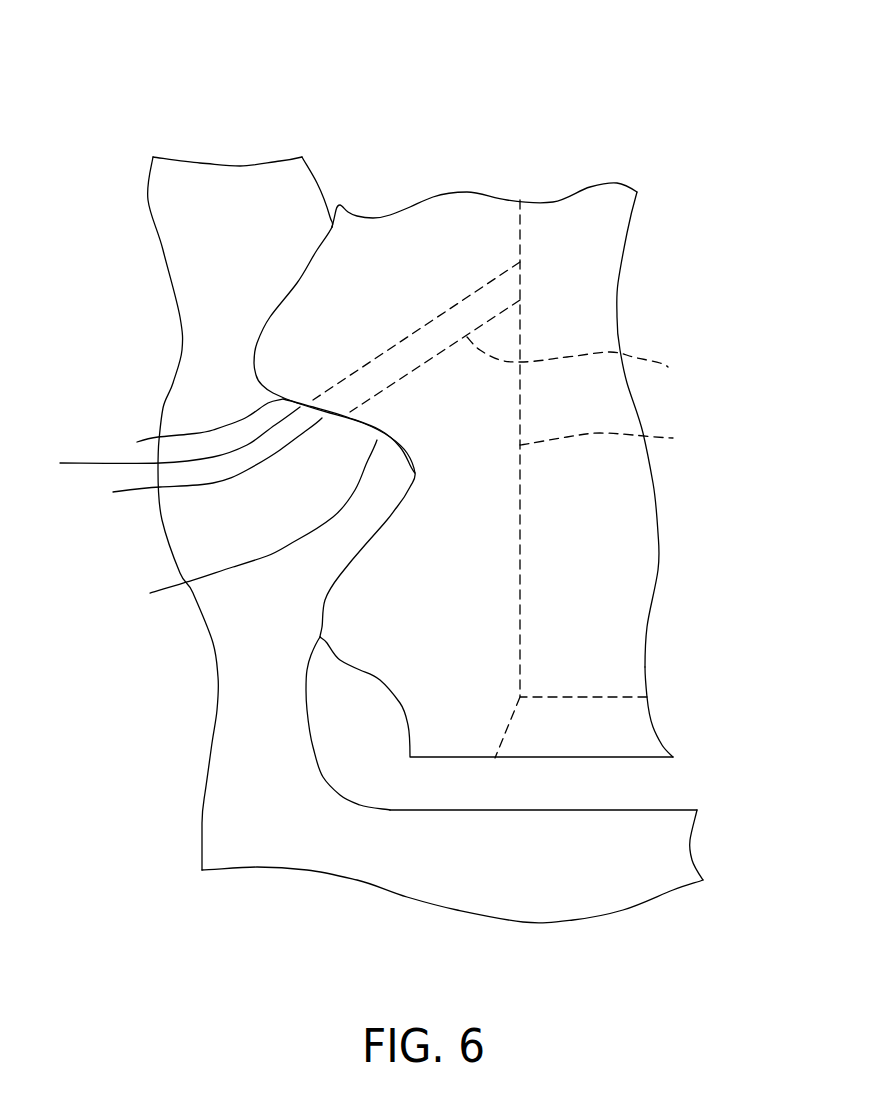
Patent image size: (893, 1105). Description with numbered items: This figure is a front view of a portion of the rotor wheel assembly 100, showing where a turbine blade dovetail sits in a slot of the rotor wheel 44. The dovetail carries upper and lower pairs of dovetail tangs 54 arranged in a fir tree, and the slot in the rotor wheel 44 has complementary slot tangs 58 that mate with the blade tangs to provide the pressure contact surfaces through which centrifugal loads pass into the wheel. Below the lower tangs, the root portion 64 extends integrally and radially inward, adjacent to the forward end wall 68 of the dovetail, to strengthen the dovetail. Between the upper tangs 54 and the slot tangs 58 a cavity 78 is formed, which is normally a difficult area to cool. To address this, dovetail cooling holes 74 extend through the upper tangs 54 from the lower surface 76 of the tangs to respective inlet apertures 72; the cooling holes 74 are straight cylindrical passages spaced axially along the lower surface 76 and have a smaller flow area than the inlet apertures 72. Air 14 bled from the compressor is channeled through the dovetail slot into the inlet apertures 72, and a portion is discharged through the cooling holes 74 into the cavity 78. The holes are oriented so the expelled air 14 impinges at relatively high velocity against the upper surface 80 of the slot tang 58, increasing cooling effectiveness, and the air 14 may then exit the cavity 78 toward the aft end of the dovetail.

The rotor wheel assembly 100 is at (242, 107).
The air 14 is at (470, 311).
The rotor wheel 44 is at (202, 823).
The dovetail tangs 54 is at (253, 363).
The slot tangs 58 is at (313, 172).
The root portion 64 is at (655, 757).
The forward end wall 68 is at (443, 600).
The inlet apertures 72 is at (616, 442).
The dovetail cooling holes 74 is at (583, 360).
The lower surface 76 is at (195, 427).
The cavity 78 is at (202, 463).
The upper surface 80 is at (247, 524).